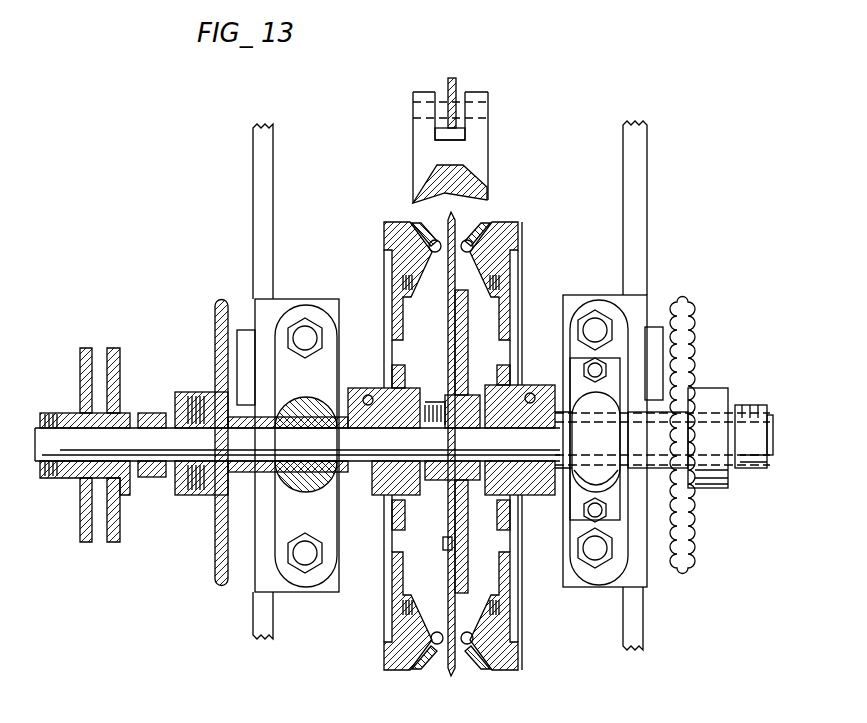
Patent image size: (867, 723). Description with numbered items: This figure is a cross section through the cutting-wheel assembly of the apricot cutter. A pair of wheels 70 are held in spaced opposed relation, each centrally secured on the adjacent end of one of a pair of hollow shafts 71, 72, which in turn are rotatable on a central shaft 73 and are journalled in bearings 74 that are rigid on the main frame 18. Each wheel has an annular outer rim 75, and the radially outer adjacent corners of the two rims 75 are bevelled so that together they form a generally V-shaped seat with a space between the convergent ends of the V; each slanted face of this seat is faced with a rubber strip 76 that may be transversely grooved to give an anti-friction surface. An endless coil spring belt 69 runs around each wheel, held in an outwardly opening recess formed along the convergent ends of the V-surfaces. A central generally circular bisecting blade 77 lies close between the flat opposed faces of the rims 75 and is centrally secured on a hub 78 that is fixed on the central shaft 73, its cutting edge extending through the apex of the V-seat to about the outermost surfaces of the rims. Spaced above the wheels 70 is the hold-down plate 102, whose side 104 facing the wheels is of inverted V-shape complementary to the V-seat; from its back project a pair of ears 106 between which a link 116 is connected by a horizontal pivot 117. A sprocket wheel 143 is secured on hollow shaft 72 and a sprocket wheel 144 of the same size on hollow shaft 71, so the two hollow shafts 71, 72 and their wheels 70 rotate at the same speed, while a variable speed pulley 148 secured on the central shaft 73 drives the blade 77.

The main frame 18 is at (255, 192).
The endless coil spring belt 69 is at (430, 242).
The wheel 70 is at (382, 246).
The hollow shaft 71 is at (512, 403).
The hollow shaft 72 is at (350, 406).
The central shaft 73 is at (42, 443).
The bearing 74 is at (322, 482).
The annular outer rim 75 is at (521, 222).
The rubber strip 76 is at (478, 232).
The blade 77 is at (447, 285).
The hub 78 is at (438, 480).
The hold-down plate 102 is at (410, 148).
The side of the hold-down 104 is at (414, 204).
The ear 106 is at (422, 92).
The link 116 is at (454, 80).
The horizontal pivot 117 is at (413, 124).
The sprocket wheel 143 is at (218, 545).
The sprocket wheel 144 is at (690, 355).
The variable speed pulley 148 is at (124, 350).